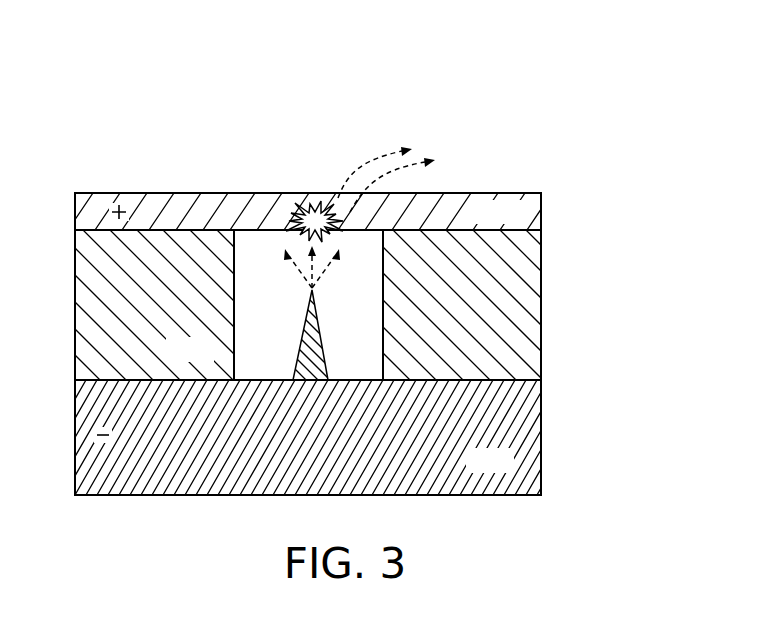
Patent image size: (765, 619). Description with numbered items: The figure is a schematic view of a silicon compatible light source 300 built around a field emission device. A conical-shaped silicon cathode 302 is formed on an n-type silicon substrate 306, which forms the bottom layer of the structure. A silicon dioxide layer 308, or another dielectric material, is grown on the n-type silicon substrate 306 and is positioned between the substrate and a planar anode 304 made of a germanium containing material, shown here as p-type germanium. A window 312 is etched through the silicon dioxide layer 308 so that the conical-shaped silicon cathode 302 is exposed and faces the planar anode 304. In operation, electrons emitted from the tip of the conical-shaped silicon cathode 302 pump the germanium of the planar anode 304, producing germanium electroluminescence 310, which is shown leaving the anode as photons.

The silicon compatible light source 300 is at (400, 77).
The conical-shaped silicon cathode 302 is at (314, 306).
The planar anode 304 is at (478, 224).
The n-type silicon substrate 306 is at (468, 472).
The silicon dioxide layer 308 is at (168, 361).
The germanium electroluminescence 310 is at (441, 139).
The window 312 is at (242, 361).